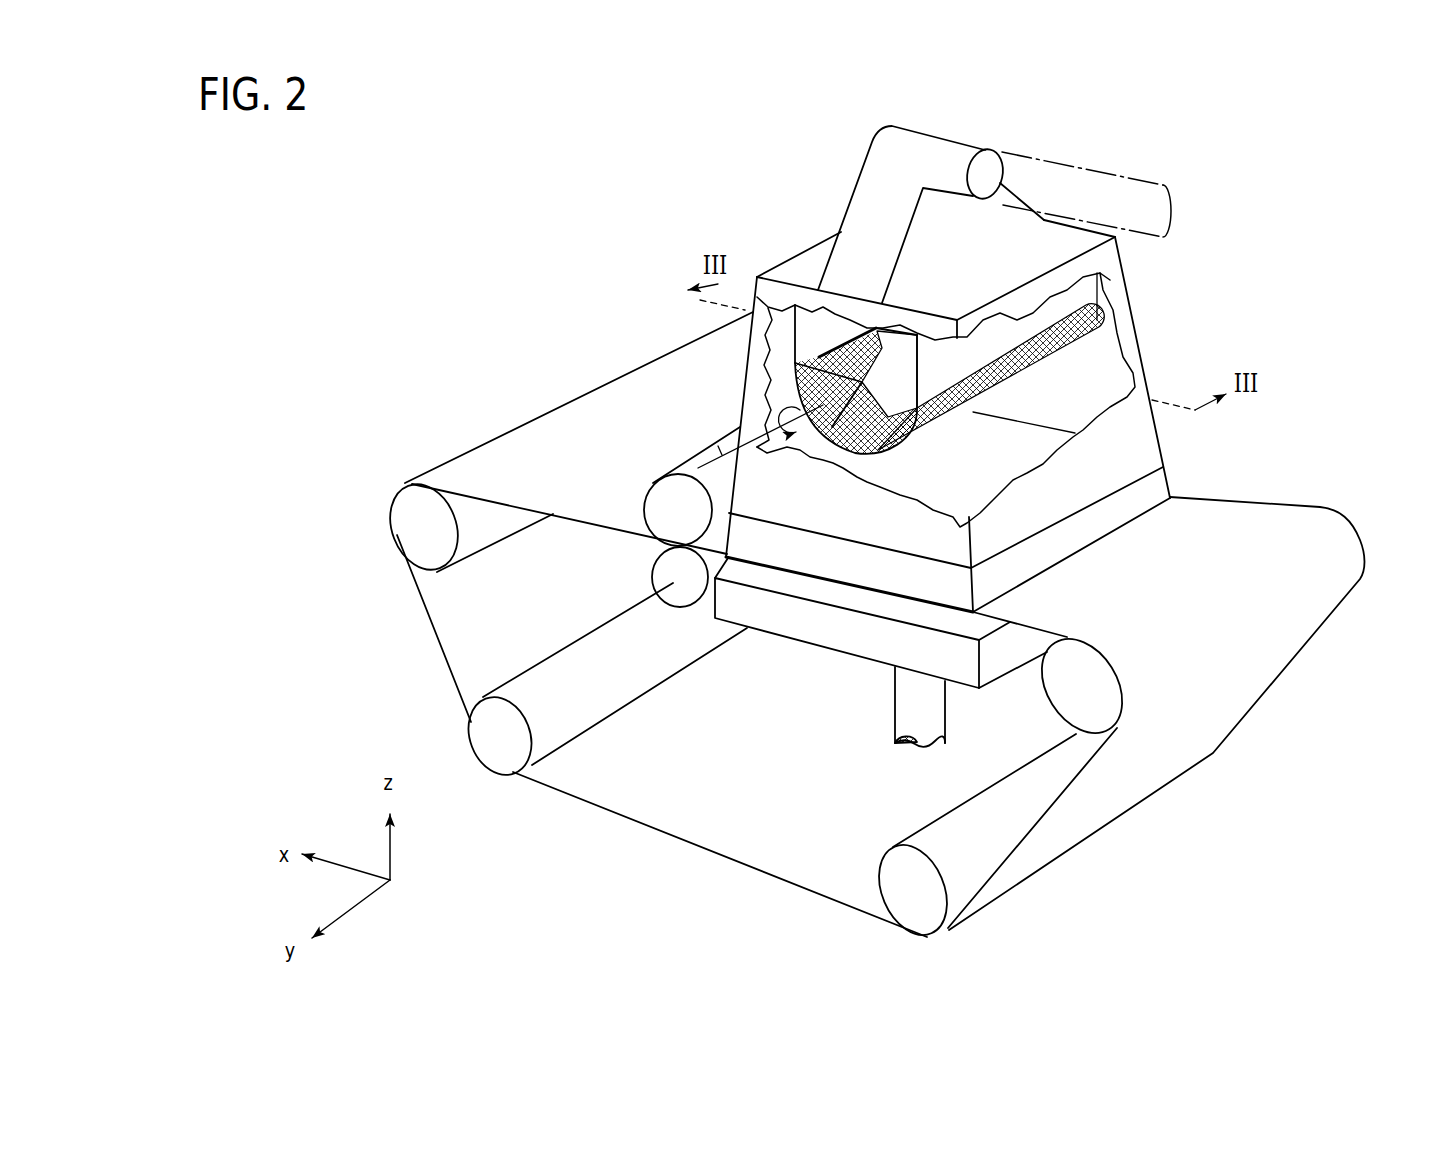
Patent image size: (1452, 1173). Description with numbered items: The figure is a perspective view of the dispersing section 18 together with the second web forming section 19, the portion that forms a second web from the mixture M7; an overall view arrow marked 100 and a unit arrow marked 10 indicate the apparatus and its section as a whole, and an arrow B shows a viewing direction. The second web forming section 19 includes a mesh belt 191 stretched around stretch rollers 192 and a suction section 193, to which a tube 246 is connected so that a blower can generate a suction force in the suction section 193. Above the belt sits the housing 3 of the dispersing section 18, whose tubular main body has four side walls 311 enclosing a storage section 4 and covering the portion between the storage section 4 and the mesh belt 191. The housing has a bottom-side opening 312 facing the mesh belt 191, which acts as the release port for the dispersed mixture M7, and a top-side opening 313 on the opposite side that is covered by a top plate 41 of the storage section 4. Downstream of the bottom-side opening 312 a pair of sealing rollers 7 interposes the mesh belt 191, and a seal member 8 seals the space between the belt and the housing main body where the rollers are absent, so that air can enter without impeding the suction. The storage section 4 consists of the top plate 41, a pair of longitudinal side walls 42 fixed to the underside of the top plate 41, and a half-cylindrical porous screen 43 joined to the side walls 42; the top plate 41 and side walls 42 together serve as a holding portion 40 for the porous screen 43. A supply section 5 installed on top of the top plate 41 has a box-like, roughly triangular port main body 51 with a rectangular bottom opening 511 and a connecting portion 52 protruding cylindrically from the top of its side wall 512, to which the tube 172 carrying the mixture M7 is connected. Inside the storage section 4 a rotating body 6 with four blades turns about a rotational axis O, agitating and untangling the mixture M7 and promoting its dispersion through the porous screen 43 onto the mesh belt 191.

The sheet manufacturing apparatus 100 is at (326, 212).
The raw material supply unit 10 is at (539, 178).
The dispersing section 18 is at (1250, 178).
The second web forming section 19 is at (751, 896).
The mesh belt 191 is at (1258, 512).
The stretch rollers 192 is at (487, 742).
The suction section 193 is at (810, 632).
The housing 3 is at (1146, 431).
The side walls 311 is at (723, 527).
The bottom-side opening 312 is at (717, 530).
The top-side opening 313 is at (1118, 240).
The storage section 4 is at (786, 357).
The holding portion 40 is at (928, 378).
The top plate 41 is at (815, 262).
The side walls 42 is at (775, 348).
The porous screen 43 is at (1100, 320).
The supply section 5 is at (866, 146).
The port main body 51 is at (857, 176).
The connecting portion 52 is at (979, 148).
The opening 511 is at (977, 260).
The side wall 512 is at (925, 255).
The rotating body 6 is at (831, 338).
The sealing rollers 7 is at (672, 522).
The seal member 8 is at (800, 548).
The tube 172 is at (1152, 178).
The tube 246 is at (903, 703).
The mixture M7 is at (1012, 181).
The direction B is at (945, 66).
The rotational axis O is at (707, 437).